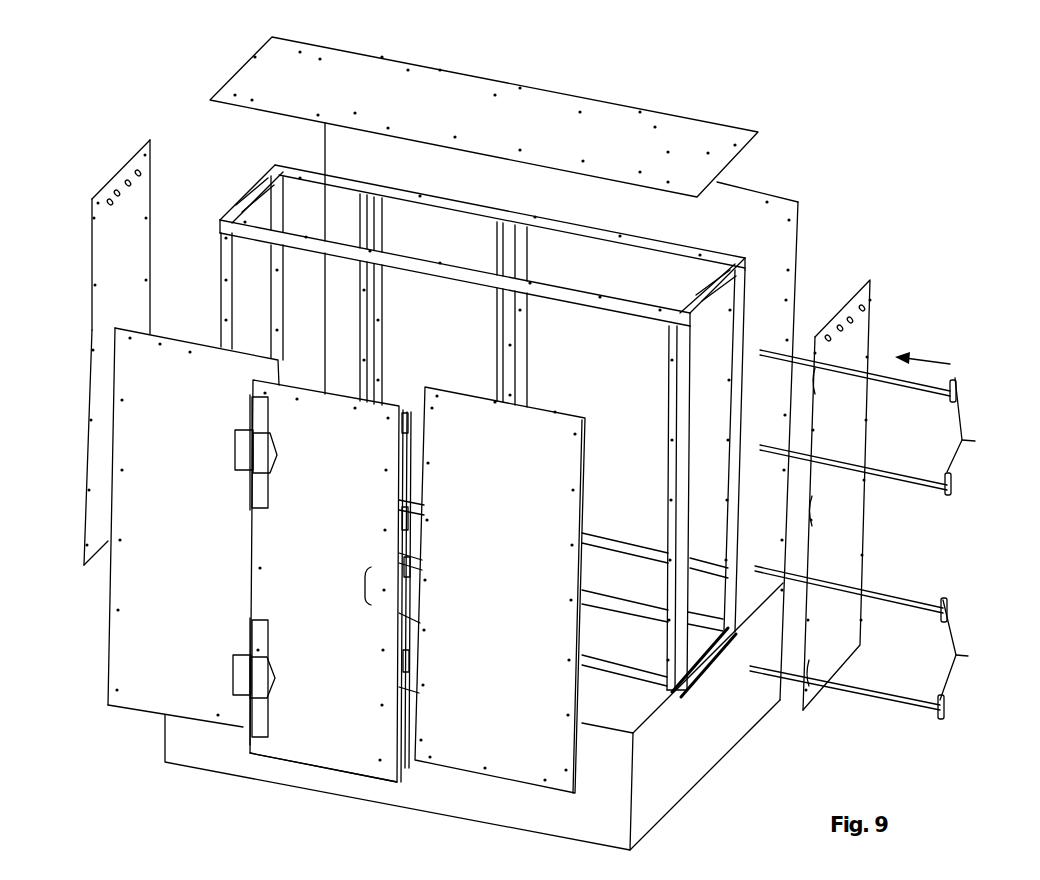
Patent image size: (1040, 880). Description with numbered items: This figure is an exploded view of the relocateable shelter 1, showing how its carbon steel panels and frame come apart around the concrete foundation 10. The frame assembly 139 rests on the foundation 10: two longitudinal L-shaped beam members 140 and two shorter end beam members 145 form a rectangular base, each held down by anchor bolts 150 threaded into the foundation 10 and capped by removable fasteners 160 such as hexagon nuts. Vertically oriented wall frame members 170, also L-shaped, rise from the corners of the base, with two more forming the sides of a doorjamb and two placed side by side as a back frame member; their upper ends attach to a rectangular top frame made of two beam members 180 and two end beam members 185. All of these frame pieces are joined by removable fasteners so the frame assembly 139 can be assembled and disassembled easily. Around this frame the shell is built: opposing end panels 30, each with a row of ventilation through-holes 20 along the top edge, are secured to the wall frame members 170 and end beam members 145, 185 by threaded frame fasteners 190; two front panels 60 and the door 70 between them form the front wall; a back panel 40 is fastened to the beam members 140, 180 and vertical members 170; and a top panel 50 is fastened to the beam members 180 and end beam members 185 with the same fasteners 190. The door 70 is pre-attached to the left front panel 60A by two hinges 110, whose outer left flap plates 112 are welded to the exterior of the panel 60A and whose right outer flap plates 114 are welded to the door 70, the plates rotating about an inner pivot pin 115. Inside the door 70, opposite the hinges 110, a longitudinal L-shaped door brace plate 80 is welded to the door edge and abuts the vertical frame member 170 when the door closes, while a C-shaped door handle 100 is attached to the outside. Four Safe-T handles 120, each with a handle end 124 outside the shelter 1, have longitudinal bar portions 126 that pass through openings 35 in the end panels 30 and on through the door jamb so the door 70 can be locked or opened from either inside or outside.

The relocateable shelter 1 is at (103, 113).
The concrete foundation 10 is at (474, 723).
The ventilation through-holes 20 is at (509, 240).
The end panels 30 is at (478, 425).
The openings 35 is at (836, 525).
The back panel 40 is at (594, 411).
The top panel 50 is at (484, 117).
The front panels 60 is at (314, 584).
The left front panel 60A is at (218, 525).
The door 70 is at (323, 791).
The door brace plate 80 is at (450, 590).
The door handle 100 is at (339, 606).
The hinges 110 is at (235, 602).
The outer left flap plates 112 is at (208, 563).
The right outer flap plates 114 is at (295, 565).
The inner pivot pin 115 is at (254, 567).
The Safe-T handles 120 is at (847, 682).
The handle end 124 is at (891, 525).
The longitudinal bar portion 126 is at (875, 533).
The frame assembly 139 is at (253, 173).
The beam members 140 is at (672, 743).
The end beam members 145 is at (716, 672).
The anchor bolts 150 is at (722, 645).
The removable fasteners 160 is at (700, 625).
The wall frame members 170 is at (550, 433).
The beam members 180 is at (546, 211).
The end beam members 185 is at (448, 229).
The frame fasteners 190 is at (477, 529).